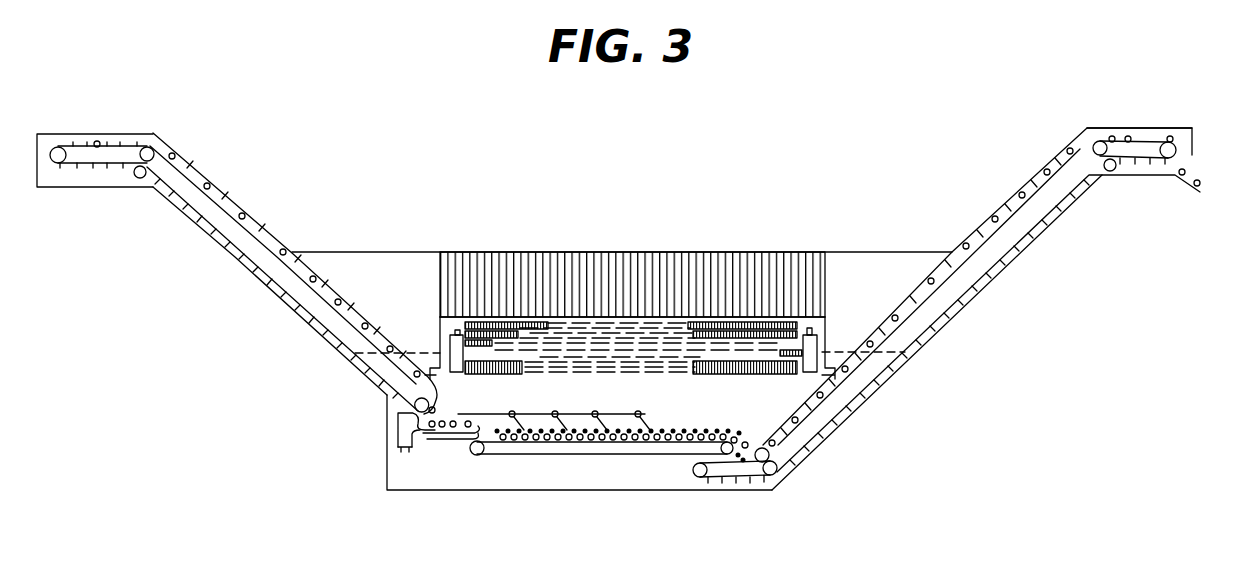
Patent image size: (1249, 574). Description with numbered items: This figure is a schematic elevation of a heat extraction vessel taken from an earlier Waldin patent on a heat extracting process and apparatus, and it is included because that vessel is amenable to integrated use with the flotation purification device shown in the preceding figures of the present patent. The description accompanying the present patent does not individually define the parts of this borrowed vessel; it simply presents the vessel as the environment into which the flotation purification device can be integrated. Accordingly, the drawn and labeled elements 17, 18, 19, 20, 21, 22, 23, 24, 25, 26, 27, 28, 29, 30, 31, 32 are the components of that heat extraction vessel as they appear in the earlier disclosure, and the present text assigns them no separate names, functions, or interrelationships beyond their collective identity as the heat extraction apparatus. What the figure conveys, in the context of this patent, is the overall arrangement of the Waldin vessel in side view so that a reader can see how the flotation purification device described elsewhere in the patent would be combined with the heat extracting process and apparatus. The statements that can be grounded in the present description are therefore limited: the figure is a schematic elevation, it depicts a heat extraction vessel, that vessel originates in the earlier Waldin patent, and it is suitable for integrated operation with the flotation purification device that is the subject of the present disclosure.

The collecting hopper 17 is at (590, 490).
The feed conveyor 18 is at (80, 140).
The guide roller assembly 19 is at (606, 397).
The discharge conveyor end 20 is at (1192, 142).
The strands 21 is at (638, 345).
The comb guide 22 is at (612, 252).
The liquid level line 23 is at (403, 252).
The inclined feed conveyor 24 is at (146, 142).
The conveyor element 25 is at (113, 141).
The conveyor discharge end 26 is at (432, 384).
The guide chute 27 is at (428, 445).
The tray 28 is at (447, 440).
The roller 29 is at (485, 452).
The conveyor belt 30 is at (556, 454).
The wiper bar 31 is at (652, 425).
The inclined discharge conveyor 32 is at (805, 452).